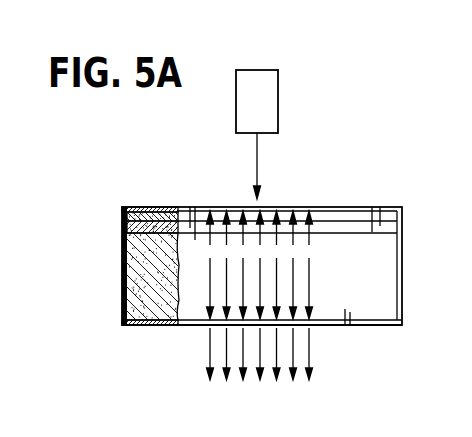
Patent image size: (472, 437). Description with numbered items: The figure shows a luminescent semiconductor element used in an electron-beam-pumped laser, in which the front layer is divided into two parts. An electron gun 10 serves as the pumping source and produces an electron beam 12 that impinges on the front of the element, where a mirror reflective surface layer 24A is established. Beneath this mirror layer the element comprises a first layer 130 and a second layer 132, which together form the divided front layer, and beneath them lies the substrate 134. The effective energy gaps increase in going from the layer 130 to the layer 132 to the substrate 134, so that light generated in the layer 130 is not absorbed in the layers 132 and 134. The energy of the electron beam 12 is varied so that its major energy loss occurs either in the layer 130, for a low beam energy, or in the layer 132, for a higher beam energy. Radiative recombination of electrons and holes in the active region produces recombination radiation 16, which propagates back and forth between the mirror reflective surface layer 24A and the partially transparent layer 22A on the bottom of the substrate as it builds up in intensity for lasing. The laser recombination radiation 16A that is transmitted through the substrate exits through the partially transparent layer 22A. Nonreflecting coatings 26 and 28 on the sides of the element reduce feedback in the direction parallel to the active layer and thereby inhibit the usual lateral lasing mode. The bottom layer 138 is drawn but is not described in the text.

The electron gun 10 is at (268, 89).
The electron beam 12 is at (258, 152).
The recombination radiation 16 is at (309, 270).
The laser recombination radiation 16A is at (211, 356).
The partially transparent layer 22A is at (361, 323).
The mirror reflective surface layer 24A is at (123, 207).
The nonreflecting coating 26 is at (123, 307).
The nonreflecting coating 28 is at (403, 282).
The layer 130 is at (123, 216).
The layer 132 is at (125, 226).
The substrate 134 is at (135, 272).
The bottom electrode layer 138 is at (130, 326).